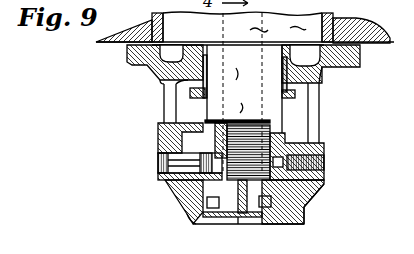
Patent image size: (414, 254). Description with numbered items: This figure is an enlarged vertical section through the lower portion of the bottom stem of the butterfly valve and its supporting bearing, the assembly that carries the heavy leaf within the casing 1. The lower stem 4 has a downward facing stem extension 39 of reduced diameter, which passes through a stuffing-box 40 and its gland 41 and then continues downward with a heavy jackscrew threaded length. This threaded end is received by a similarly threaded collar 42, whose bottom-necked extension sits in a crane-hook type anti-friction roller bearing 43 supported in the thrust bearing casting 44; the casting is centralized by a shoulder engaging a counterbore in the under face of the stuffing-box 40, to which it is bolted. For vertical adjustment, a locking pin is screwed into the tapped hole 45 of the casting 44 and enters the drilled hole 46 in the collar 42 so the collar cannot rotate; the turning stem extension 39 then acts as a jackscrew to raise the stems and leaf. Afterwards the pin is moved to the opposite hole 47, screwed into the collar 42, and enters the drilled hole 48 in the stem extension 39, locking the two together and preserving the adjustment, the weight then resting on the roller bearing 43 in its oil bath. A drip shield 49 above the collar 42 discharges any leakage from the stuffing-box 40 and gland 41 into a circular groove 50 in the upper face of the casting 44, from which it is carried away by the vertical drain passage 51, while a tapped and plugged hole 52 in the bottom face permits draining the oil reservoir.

The casing 1 is at (389, 43).
The lower stem 4 is at (242, 27).
The stem extension 39 is at (243, 129).
The stuffing-box 40 is at (153, 68).
The gland 41 is at (190, 92).
The threaded collar 42 is at (185, 186).
The anti-friction roller bearing 43 is at (192, 214).
The thrust bearing casting 44 is at (207, 233).
The tapped hole 45 is at (320, 166).
The drilled hole 46 is at (284, 174).
The opposite hole 47 is at (175, 160).
The drilled hole 48 is at (180, 180).
The drip shield 49 is at (190, 127).
The circular groove 50 is at (300, 140).
The vertical drain passage 51 is at (297, 225).
The tapped and plugged hole 52 is at (240, 224).